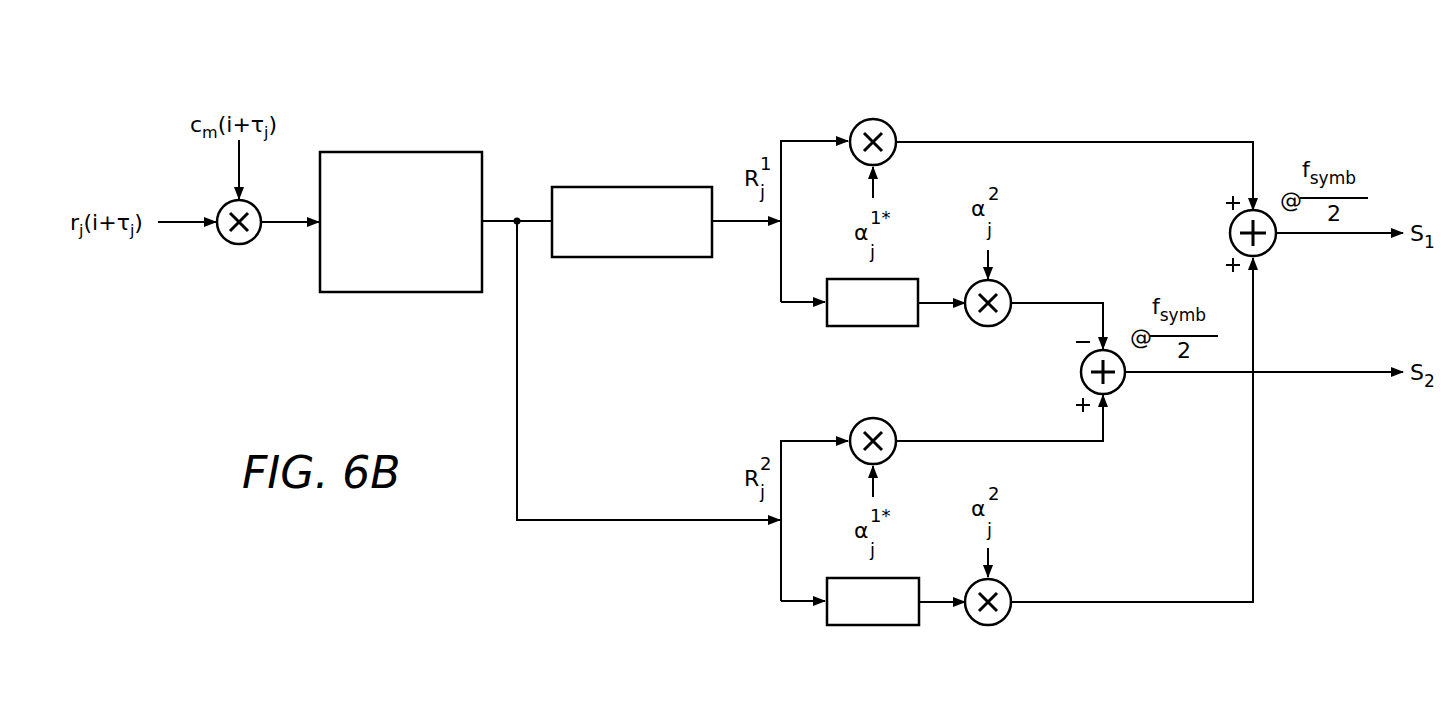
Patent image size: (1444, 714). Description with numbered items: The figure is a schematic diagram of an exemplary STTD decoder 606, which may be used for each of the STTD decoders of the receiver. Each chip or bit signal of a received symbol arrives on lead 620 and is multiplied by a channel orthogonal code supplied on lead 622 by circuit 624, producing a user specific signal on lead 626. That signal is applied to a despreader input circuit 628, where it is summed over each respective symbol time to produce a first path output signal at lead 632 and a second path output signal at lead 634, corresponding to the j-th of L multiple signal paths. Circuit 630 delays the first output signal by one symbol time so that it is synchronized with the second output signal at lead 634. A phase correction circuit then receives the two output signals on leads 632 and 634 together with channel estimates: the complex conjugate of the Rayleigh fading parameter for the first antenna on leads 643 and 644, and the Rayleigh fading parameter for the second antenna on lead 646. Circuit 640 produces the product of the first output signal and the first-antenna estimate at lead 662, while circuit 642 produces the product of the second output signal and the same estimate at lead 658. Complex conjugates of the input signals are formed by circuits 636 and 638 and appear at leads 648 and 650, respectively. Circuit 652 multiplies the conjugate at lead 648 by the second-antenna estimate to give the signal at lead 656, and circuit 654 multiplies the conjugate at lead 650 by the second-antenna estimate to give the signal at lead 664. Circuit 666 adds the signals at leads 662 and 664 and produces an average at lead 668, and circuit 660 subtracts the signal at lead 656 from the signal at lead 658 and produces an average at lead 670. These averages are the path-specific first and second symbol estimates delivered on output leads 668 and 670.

The STTD decoder 606 is at (1060, 74).
The lead 620 is at (183, 232).
The lead 622 is at (236, 158).
The circuit 624 is at (239, 246).
The lead 626 is at (287, 232).
The despreader input circuit 628 is at (399, 150).
The circuit 630 is at (631, 185).
The lead 632 is at (750, 232).
The lead 634 is at (724, 526).
The circuit 636 is at (826, 320).
The circuit 638 is at (873, 627).
The circuit 640 is at (875, 118).
The circuit 642 is at (875, 417).
The lead 643 is at (870, 190).
The lead 644 is at (870, 490).
The lead 646 is at (990, 256).
The lead 648 is at (937, 298).
The lead 650 is at (937, 597).
The circuit 652 is at (988, 327).
The circuit 654 is at (988, 626).
The lead 656 is at (1096, 302).
The lead 658 is at (1046, 443).
The circuit 660 is at (1122, 396).
The lead 662 is at (1137, 140).
The lead 664 is at (1137, 604).
The circuit 666 is at (1229, 232).
The output lead 668 is at (1322, 238).
The output lead 670 is at (1321, 378).